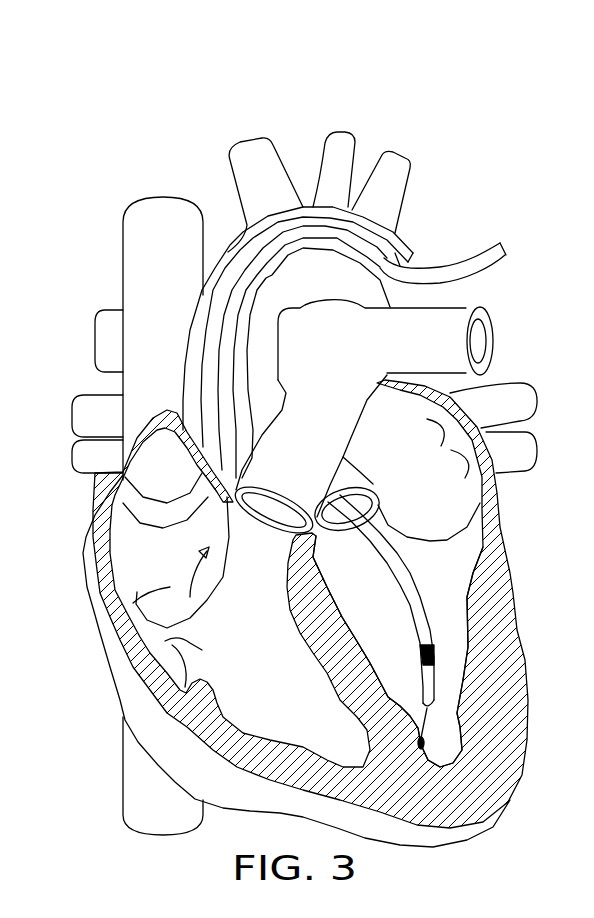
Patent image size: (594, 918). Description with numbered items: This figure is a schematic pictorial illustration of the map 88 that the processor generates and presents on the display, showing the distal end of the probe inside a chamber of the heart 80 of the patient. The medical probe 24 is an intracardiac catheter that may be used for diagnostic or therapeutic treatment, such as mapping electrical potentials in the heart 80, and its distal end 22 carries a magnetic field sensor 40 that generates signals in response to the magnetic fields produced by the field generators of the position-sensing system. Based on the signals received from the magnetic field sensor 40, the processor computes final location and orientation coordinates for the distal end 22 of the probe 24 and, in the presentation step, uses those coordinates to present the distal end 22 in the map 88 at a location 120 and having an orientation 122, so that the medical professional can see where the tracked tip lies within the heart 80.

The map 88 is at (178, 127).
The heart 80 is at (140, 252).
The medical probe 24 is at (487, 270).
The distal end 22 is at (432, 699).
The magnetic field sensor 40 is at (418, 660).
The location 120 is at (455, 648).
The orientation 122 is at (428, 724).